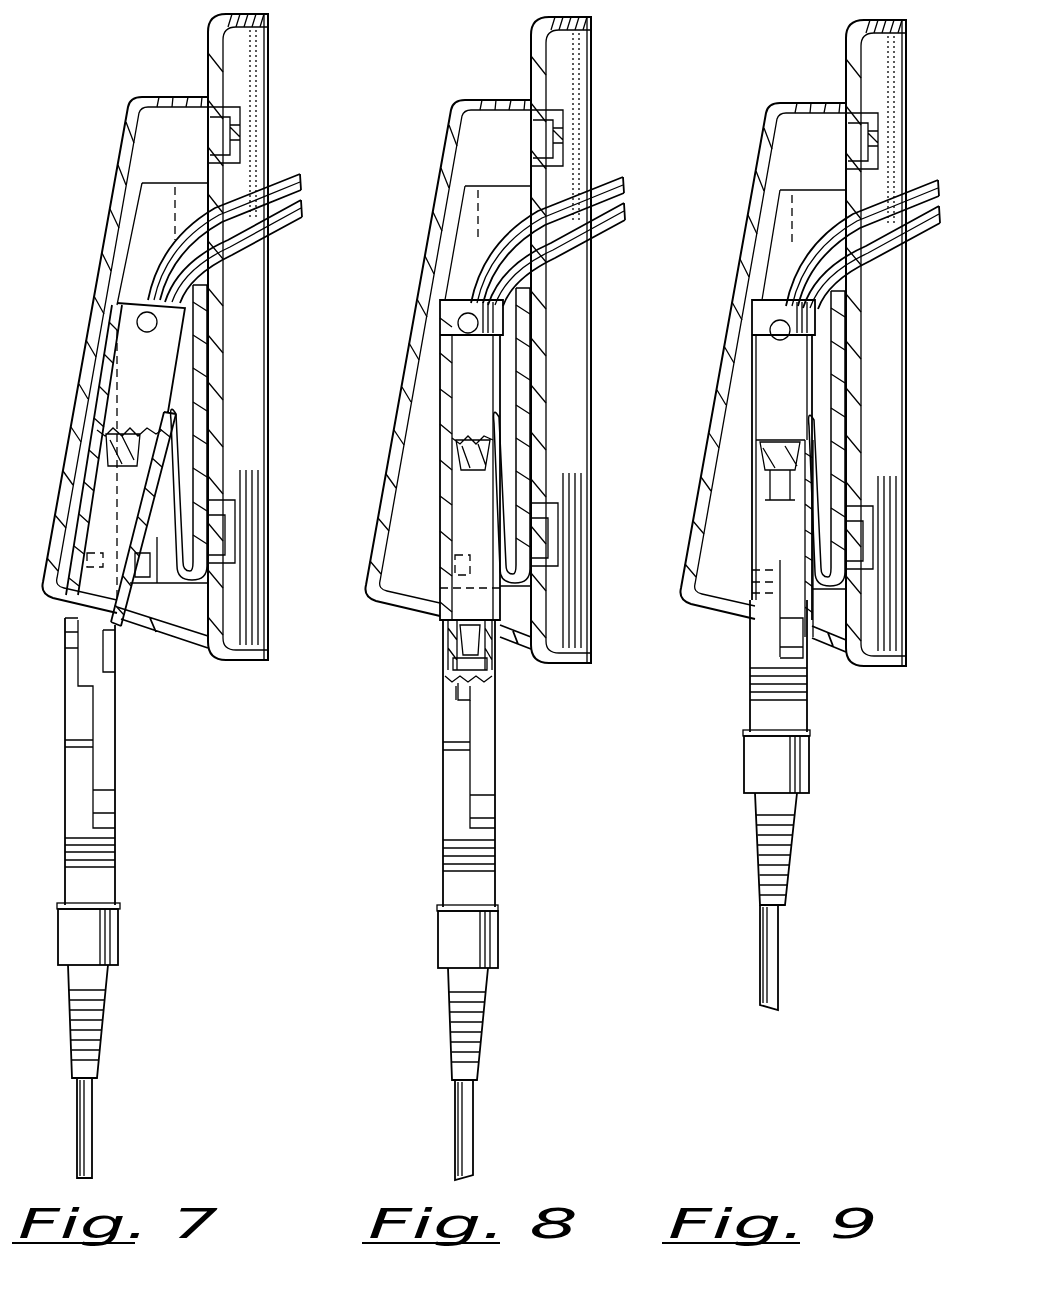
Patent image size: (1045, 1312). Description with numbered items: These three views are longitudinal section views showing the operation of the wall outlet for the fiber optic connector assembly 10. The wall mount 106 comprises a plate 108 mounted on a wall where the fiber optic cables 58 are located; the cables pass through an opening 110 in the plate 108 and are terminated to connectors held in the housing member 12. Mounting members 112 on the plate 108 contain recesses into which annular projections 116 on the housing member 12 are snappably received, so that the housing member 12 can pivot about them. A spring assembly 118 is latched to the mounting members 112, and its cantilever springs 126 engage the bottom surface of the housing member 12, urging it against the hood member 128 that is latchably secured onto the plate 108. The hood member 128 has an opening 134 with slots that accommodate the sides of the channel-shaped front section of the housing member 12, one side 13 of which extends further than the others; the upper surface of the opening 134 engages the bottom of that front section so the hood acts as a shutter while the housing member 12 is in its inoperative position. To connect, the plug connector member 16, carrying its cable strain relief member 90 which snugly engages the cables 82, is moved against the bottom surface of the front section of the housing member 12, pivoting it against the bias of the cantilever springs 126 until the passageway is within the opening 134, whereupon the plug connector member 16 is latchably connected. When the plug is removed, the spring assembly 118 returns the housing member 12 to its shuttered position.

In FIG. 7, the fiber optic connector assembly 10 is at (52, 632).
In FIG. 8, the fiber optic connector assembly 10 is at (432, 636).
In FIG. 9, the fiber optic connector assembly 10 is at (740, 635).
In FIG. 7, the housing member 12 is at (108, 372).
In FIG. 8, the housing member 12 is at (445, 388).
In FIG. 9, the housing member 12 is at (755, 388).
In FIG. 7, the side 13 is at (120, 630).
In FIG. 8, the side 13 is at (500, 632).
In FIG. 9, the side 13 is at (822, 637).
In FIG. 7, the plug connector member 16 is at (110, 778).
In FIG. 8, the plug connector member 16 is at (469, 763).
In FIG. 9, the plug connector member 16 is at (810, 718).
In FIG. 7, the fiber optic cables 58 is at (286, 172).
In FIG. 8, the fiber optic cables 58 is at (608, 175).
In FIG. 9, the fiber optic cables 58 is at (918, 184).
In FIG. 7, the cables 82 is at (94, 1137).
In FIG. 8, the cables 82 is at (477, 1137).
In FIG. 9, the cables 82 is at (780, 985).
In FIG. 7, the cable strain relief member 90 is at (112, 953).
In FIG. 8, the cable strain relief member 90 is at (497, 953).
In FIG. 9, the cable strain relief member 90 is at (810, 781).
In FIG. 7, the wall mount 106 is at (276, 88).
In FIG. 8, the wall mount 106 is at (606, 89).
In FIG. 9, the wall mount 106 is at (912, 98).
In FIG. 7, the plate 108 is at (258, 42).
In FIG. 8, the plate 108 is at (580, 46).
In FIG. 9, the plate 108 is at (885, 60).
In FIG. 7, the opening 110 is at (215, 258).
In FIG. 8, the opening 110 is at (537, 262).
In FIG. 9, the opening 110 is at (852, 268).
In FIG. 7, the mounting members 112 is at (147, 210).
In FIG. 8, the mounting members 112 is at (468, 210).
In FIG. 9, the mounting members 112 is at (785, 215).
In FIG. 7, the annular projections 116 is at (145, 318).
In FIG. 8, the annular projections 116 is at (458, 323).
In FIG. 9, the annular projections 116 is at (770, 330).
In FIG. 7, the spring assembly 118 is at (207, 435).
In FIG. 8, the spring assembly 118 is at (530, 410).
In FIG. 9, the spring assembly 118 is at (848, 385).
In FIG. 7, the cantilever springs 126 is at (180, 490).
In FIG. 8, the cantilever springs 126 is at (508, 478).
In FIG. 9, the cantilever springs 126 is at (822, 458).
In FIG. 7, the hood member 128 is at (70, 447).
In FIG. 8, the hood member 128 is at (390, 478).
In FIG. 9, the hood member 128 is at (700, 487).
In FIG. 7, the opening 134 is at (167, 620).
In FIG. 8, the opening 134 is at (530, 625).
In FIG. 9, the opening 134 is at (843, 632).